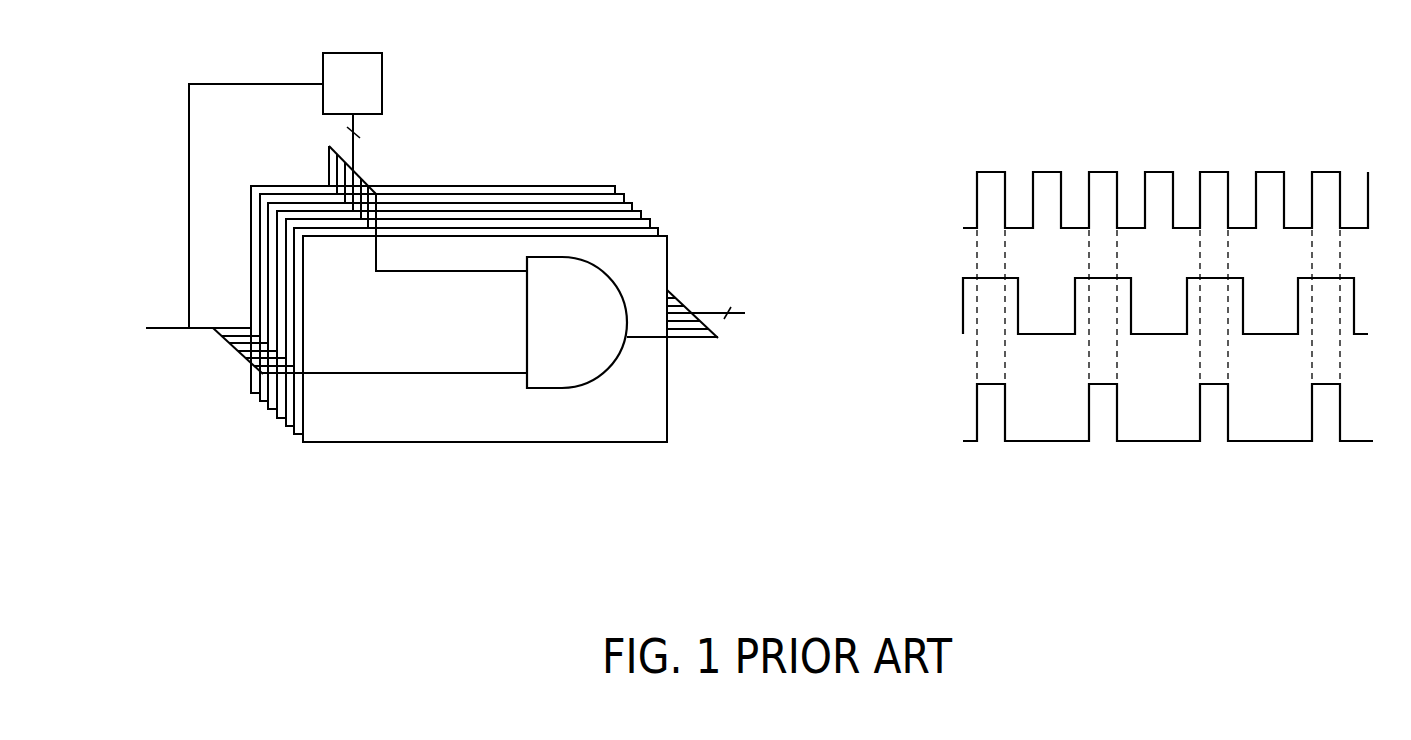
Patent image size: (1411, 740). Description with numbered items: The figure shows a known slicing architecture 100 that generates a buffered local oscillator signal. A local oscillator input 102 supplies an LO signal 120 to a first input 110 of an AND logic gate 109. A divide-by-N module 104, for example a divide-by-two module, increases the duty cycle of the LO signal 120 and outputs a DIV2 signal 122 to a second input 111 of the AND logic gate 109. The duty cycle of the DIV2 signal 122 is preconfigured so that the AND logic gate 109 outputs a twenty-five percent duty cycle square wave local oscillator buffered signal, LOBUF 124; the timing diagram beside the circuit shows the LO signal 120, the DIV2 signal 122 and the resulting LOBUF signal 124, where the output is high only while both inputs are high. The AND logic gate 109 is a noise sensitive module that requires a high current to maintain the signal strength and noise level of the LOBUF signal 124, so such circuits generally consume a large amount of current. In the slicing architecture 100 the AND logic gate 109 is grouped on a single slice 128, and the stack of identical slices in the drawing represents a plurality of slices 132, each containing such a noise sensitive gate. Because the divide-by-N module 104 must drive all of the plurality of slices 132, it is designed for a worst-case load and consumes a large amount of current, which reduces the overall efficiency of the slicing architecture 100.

The slicing architecture 100 is at (591, 60).
The local oscillator input 102 is at (167, 332).
The divide-by-N module 104 is at (383, 70).
The AND logic gate 109 is at (613, 373).
The first input 110 is at (527, 378).
The second input 111 is at (527, 273).
The LO signal 120 is at (880, 172).
The DIV2 signal 122 is at (880, 287).
The local oscillator buffered signal (LOBUF) 124 is at (880, 391).
The slice 128 is at (670, 397).
The plurality of slices 132 is at (603, 177).